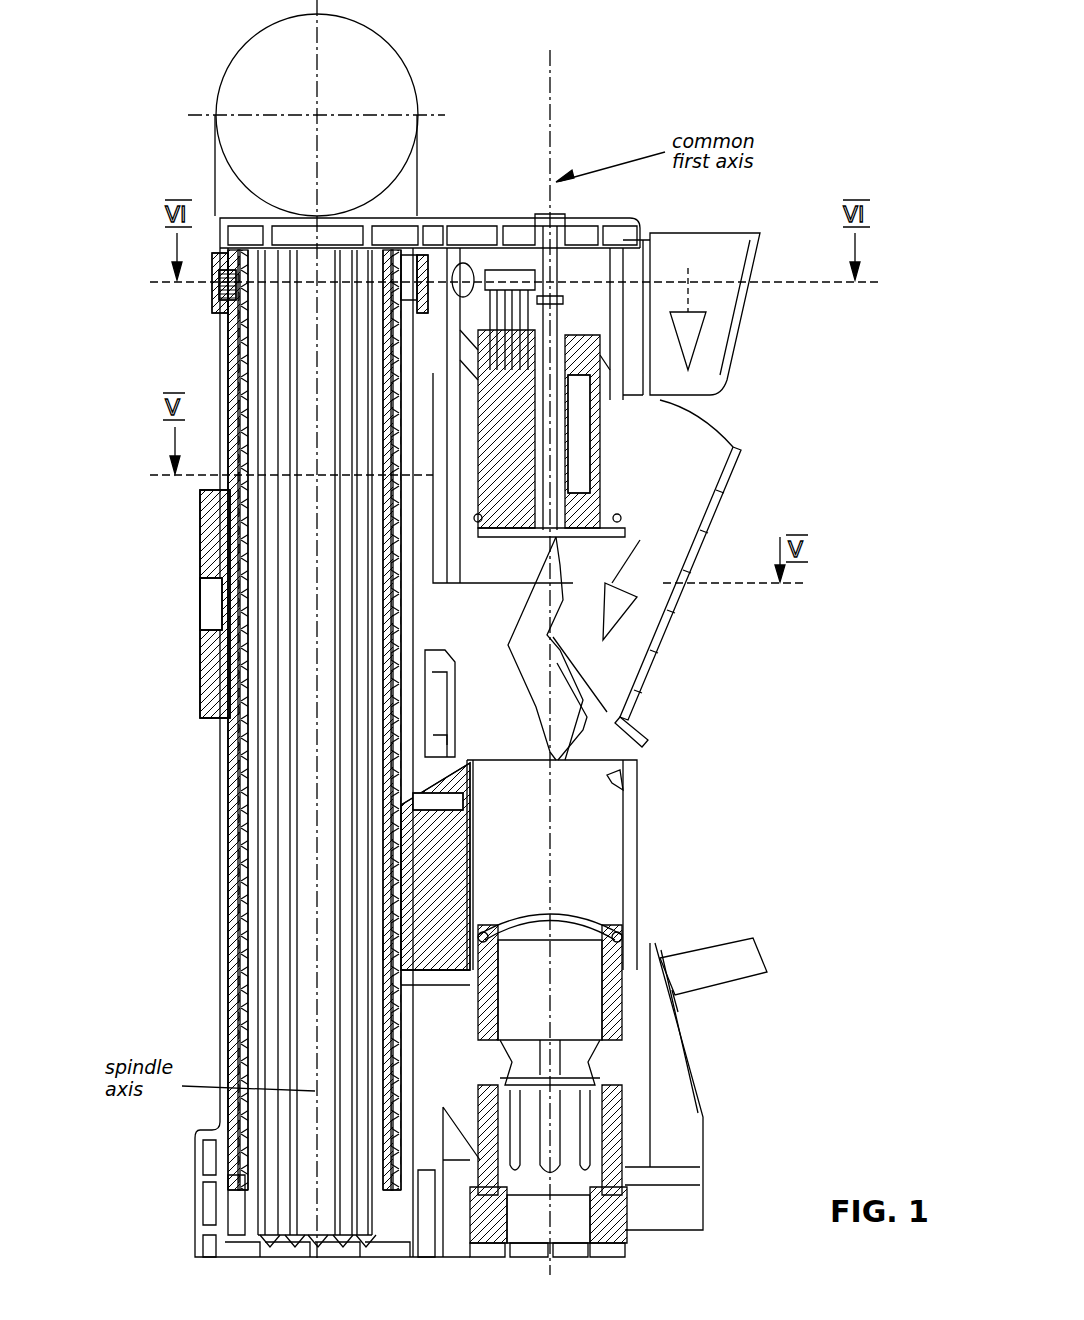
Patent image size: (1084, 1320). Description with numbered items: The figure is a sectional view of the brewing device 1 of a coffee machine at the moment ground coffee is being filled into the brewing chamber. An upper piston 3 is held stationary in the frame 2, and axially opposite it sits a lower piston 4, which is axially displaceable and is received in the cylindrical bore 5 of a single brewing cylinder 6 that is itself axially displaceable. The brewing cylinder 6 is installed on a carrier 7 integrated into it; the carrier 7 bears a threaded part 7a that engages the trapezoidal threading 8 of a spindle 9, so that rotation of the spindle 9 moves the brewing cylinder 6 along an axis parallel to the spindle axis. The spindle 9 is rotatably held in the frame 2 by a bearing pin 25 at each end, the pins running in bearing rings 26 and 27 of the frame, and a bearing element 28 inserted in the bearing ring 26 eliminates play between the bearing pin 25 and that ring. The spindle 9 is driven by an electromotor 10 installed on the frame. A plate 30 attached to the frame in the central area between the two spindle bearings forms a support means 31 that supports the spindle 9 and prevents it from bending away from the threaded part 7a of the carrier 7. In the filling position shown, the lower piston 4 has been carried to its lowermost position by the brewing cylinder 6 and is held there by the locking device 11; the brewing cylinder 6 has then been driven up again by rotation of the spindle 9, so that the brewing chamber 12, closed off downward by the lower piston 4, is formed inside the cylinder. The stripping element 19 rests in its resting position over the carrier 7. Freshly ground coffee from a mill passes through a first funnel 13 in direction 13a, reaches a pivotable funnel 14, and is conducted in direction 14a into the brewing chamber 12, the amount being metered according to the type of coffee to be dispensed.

The brewing device 1 is at (732, 662).
The frame 2 is at (482, 232).
The upper piston 3 is at (603, 430).
The lower piston 4 is at (590, 1013).
The cylindrical bore 5 is at (625, 778).
The brewing cylinder 6 is at (640, 860).
The carrier 7 is at (428, 895).
The threaded part 7a is at (393, 934).
The trapezoidal threading 8 is at (230, 527).
The spindle 9 is at (290, 792).
The electromotor 10 is at (378, 66).
The locking device 11 is at (622, 1098).
The brewing chamber 12 is at (600, 877).
The first funnel 13 is at (745, 318).
The direction 13a is at (690, 305).
The pivotable funnel 14 is at (733, 493).
The direction 14a is at (640, 575).
The stripping element 19 is at (440, 697).
The bearing pin 25 is at (232, 352).
The bearing ring 26 is at (408, 272).
The bearing ring 27 is at (238, 1210).
The bearing element 28 is at (215, 292).
The plate 30 is at (215, 556).
The support means 31 is at (190, 693).